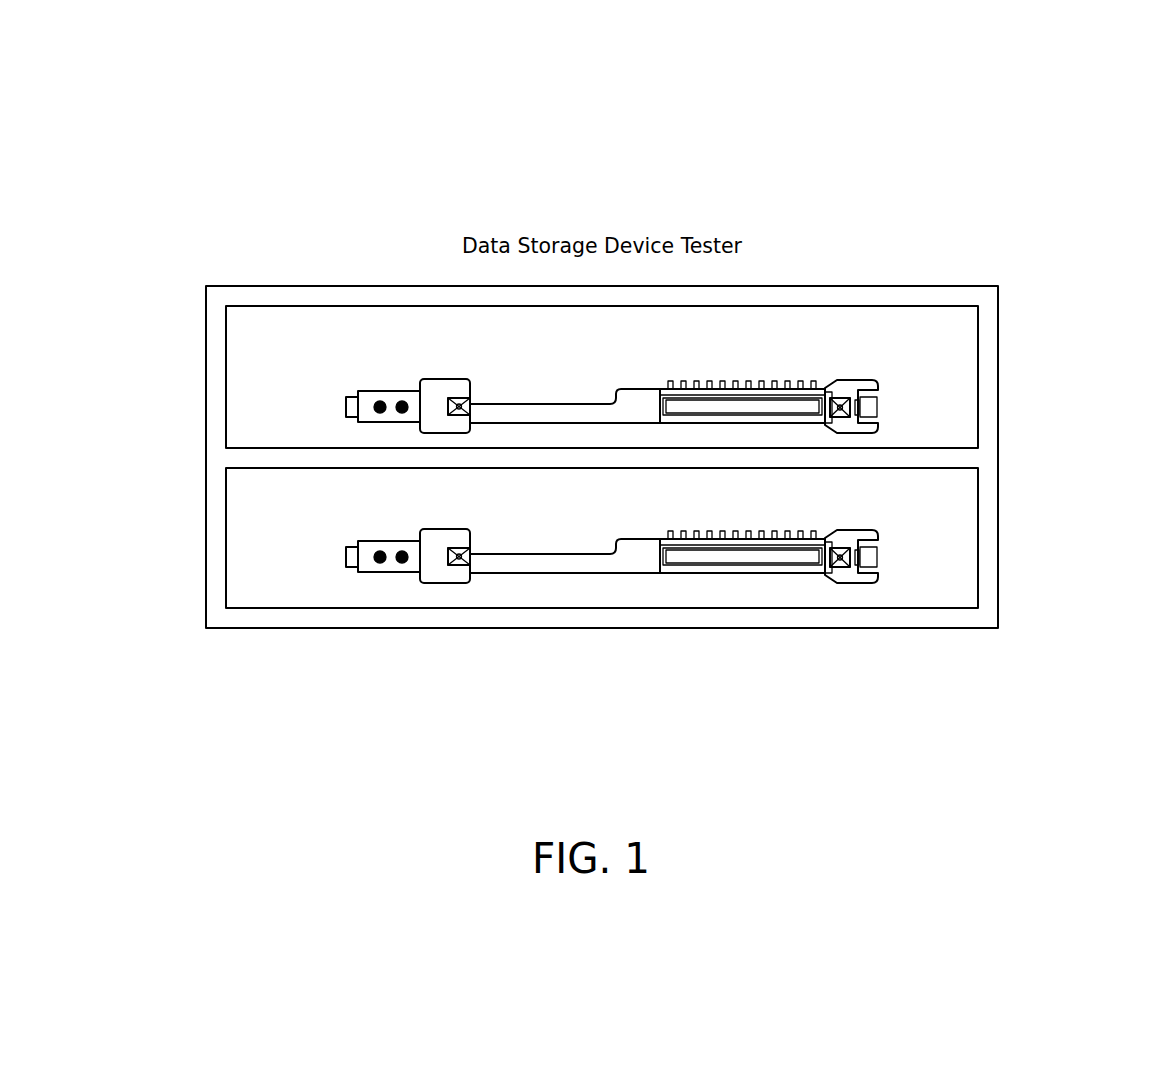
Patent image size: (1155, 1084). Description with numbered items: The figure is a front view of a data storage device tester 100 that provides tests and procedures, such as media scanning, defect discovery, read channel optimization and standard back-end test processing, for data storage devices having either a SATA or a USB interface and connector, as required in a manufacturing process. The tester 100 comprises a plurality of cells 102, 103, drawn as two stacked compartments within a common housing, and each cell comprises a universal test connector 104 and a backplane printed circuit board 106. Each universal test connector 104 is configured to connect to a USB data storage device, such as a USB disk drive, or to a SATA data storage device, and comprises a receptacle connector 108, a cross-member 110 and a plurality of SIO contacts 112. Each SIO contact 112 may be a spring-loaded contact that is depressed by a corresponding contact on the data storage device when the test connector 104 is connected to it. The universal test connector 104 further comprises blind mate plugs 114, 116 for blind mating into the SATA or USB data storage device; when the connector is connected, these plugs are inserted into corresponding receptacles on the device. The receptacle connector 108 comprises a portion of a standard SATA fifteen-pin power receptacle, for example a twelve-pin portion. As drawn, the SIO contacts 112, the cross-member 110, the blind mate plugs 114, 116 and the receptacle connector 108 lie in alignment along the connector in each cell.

The data storage device tester 100 is at (1095, 142).
The cell 102 is at (212, 373).
The cell 103 is at (212, 533).
The universal test connector 104 is at (920, 354).
The backplane printed circuit board 106 is at (273, 328).
The receptacle connector 108 is at (728, 403).
The cross-member 110 is at (535, 405).
The SIO contacts 112 is at (390, 373).
The blind mate plug 114 is at (452, 397).
The blind mate plug 116 is at (838, 398).